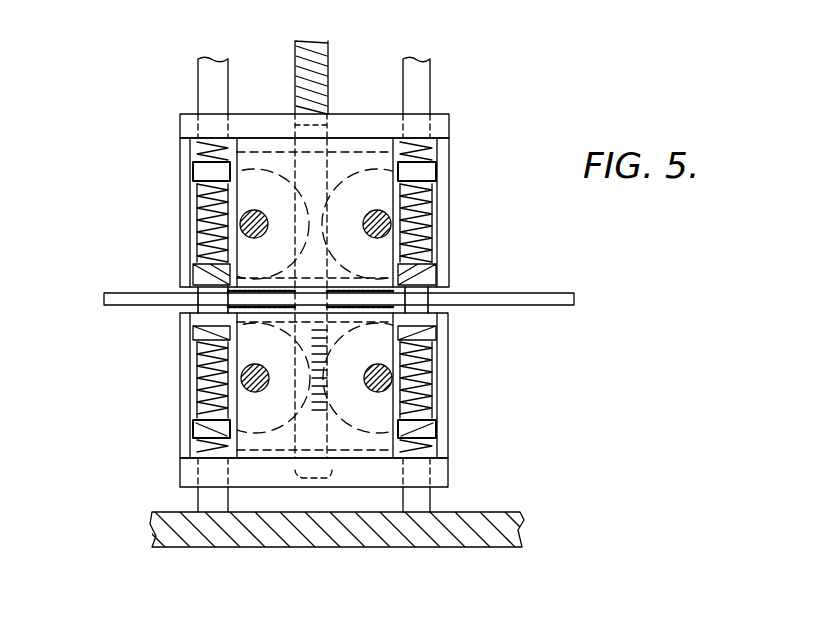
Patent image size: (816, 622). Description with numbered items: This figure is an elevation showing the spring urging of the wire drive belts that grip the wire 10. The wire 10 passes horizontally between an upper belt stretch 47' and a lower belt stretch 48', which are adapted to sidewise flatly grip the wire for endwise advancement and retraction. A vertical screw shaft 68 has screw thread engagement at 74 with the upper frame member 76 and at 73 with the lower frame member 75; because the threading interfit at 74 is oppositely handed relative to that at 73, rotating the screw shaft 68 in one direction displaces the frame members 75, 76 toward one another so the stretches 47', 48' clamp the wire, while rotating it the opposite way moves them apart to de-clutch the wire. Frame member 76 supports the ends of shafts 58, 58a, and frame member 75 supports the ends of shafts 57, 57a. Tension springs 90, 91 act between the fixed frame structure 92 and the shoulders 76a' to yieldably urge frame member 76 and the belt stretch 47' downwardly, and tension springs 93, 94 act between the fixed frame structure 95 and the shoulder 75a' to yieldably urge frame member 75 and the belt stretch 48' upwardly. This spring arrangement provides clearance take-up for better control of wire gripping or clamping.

The wire 10 is at (588, 289).
The belt stretch 47' is at (344, 214).
The belt stretch 48' is at (350, 384).
The shaft 57 is at (192, 398).
The shaft 57a is at (449, 410).
The shaft 58 is at (192, 229).
The shaft 58a is at (449, 213).
The screw shaft 68 is at (295, 72).
The screw thread engagement 73 is at (343, 470).
The screw thread engagement 74 is at (322, 130).
The frame member 75 is at (449, 472).
The shoulder 75a' is at (333, 346).
The frame member 76 is at (443, 114).
The shoulder 76a' is at (337, 256).
The tension spring 90 is at (182, 194).
The tension spring 91 is at (449, 187).
The fixed frame structure 92 is at (182, 171).
The tension spring 93 is at (185, 366).
The tension spring 94 is at (449, 372).
The fixed frame structure 95 is at (192, 436).